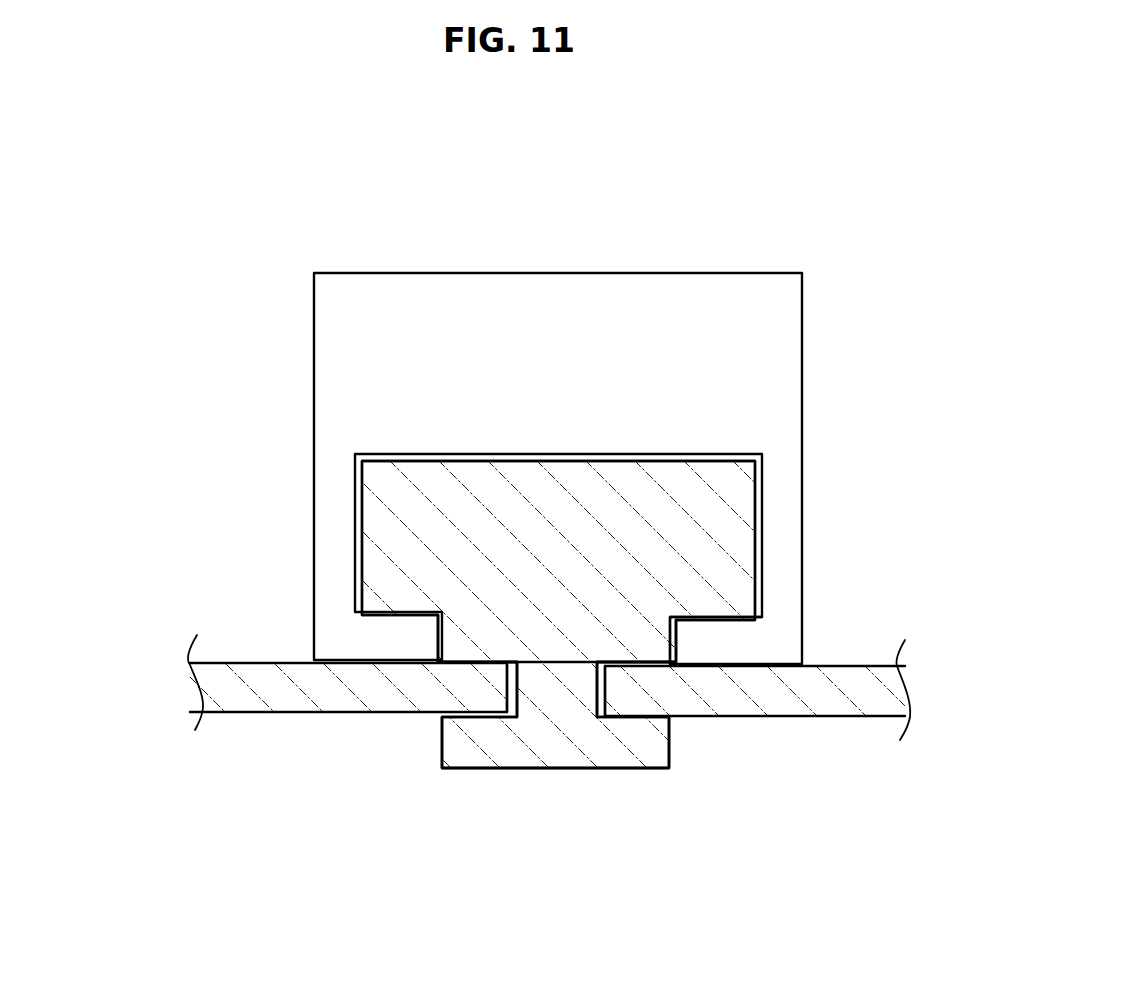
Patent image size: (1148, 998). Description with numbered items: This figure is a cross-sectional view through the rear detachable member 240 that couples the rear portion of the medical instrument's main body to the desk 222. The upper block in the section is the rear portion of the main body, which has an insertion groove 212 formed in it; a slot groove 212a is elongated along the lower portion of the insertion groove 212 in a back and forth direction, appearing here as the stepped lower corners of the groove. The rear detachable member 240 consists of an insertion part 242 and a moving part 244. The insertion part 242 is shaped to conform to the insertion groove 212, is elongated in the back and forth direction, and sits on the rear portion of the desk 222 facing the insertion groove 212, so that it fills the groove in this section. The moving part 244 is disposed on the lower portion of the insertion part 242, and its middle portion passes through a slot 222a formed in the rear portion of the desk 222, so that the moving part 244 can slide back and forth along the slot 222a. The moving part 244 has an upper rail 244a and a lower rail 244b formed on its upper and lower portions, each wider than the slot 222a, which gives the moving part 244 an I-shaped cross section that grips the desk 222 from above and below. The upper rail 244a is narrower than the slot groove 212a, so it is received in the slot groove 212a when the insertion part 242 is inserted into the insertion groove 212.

The insertion groove 212 is at (731, 458).
The slot groove 212a is at (671, 639).
The desk 222 is at (280, 705).
The slot 222a is at (597, 688).
The rear detachable member 240 is at (140, 473).
The insertion part 242 is at (372, 510).
The moving part 244 is at (528, 686).
The upper rail 244a is at (643, 653).
The lower rail 244b is at (485, 762).